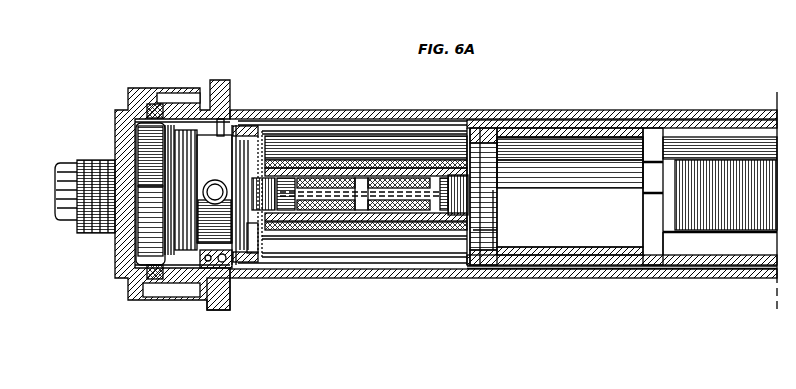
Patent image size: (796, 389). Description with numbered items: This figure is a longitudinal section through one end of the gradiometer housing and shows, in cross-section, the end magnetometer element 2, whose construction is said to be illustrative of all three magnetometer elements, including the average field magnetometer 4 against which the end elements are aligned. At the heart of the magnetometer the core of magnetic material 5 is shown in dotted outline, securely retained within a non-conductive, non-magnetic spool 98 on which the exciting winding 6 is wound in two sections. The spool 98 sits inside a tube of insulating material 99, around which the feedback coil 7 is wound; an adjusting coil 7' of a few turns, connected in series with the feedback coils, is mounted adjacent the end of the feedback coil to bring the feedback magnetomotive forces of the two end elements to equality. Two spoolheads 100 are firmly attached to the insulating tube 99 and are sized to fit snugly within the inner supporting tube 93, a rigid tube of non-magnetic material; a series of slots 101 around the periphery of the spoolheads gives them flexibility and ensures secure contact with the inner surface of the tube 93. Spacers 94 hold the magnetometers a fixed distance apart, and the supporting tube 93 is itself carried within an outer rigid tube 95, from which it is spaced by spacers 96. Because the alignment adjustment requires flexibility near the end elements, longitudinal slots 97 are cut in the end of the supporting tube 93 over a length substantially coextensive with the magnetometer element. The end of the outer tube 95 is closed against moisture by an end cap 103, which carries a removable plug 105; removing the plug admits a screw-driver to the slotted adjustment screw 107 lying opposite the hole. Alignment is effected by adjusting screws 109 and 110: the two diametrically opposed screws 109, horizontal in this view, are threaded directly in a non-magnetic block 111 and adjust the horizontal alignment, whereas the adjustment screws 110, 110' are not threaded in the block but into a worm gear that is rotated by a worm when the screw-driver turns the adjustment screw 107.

The magnetometer element 2 is at (347, 232).
The average field magnetometer 4 is at (727, 250).
The core of magnetic material 5 is at (319, 232).
The exciting winding 6 is at (375, 195).
The feedback coil 7 is at (399, 161).
The adjusting coil 7' is at (216, 196).
The supporting tube 93 is at (665, 143).
The spacer 94 is at (584, 250).
The outer supporting tube 95 is at (546, 267).
The spacer 96 is at (740, 122).
The longitudinal slot 97 is at (302, 235).
The spool 98 is at (433, 227).
The insulating tube 99 is at (393, 230).
The spoolhead 100 is at (486, 213).
The slot 101 is at (490, 168).
The end cap 103 is at (117, 116).
The plug 105 is at (60, 223).
The adjustment screw 107 is at (170, 189).
The adjusting screw 109 is at (213, 200).
The adjustment screw 110 is at (205, 301).
The pin 110' is at (245, 114).
The non-magnetic block 111 is at (173, 244).